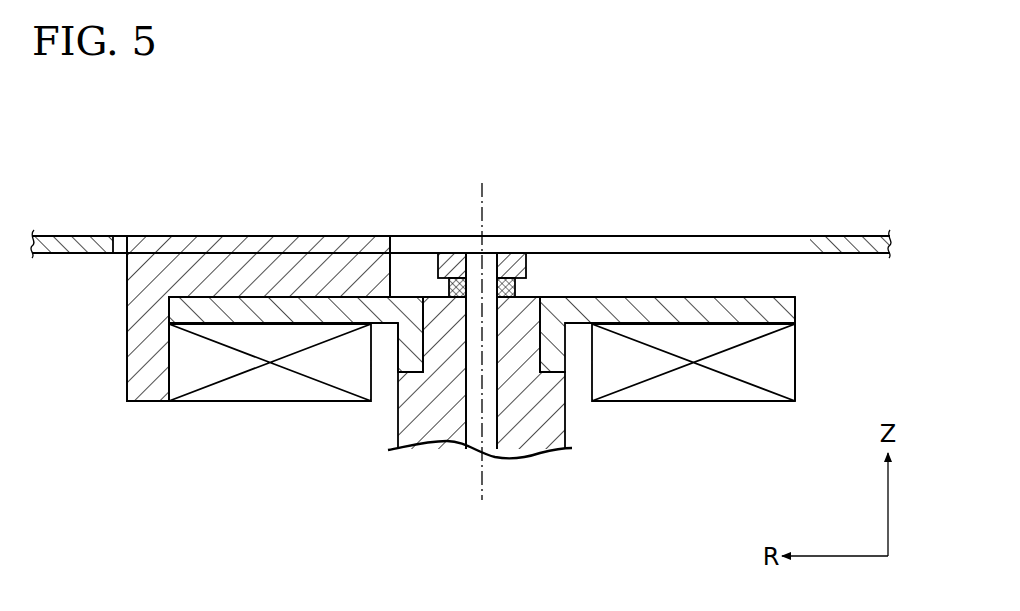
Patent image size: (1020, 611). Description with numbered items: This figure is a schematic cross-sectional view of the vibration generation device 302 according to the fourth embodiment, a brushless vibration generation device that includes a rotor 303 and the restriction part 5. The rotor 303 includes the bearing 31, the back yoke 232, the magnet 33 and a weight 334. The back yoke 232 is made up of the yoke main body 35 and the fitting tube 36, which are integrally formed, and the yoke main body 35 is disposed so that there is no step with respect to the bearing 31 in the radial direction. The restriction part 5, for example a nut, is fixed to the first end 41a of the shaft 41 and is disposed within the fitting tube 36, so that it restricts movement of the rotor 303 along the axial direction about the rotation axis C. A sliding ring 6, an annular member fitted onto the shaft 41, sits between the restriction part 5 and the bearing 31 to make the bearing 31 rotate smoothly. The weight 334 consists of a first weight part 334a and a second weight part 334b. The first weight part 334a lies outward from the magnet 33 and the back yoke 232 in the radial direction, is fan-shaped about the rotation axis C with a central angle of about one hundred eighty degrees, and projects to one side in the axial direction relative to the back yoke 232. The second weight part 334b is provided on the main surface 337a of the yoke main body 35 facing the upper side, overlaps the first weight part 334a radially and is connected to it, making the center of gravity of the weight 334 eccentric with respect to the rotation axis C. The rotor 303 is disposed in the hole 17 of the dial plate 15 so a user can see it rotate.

The restriction part 5 is at (512, 258).
The sliding ring 6 is at (507, 290).
The dial plate 15 is at (68, 243).
The hole 17 is at (600, 236).
The bearing 31 is at (532, 451).
The magnet 33 is at (269, 393).
The yoke main body 35 is at (695, 302).
The fitting tube 36 is at (402, 350).
The shaft 41 is at (470, 375).
The first end 41a is at (473, 252).
The back yoke 232 is at (768, 296).
The vibration generation device 302 is at (802, 292).
The rotor 303 is at (806, 358).
The weight 334 is at (315, 152).
The first weight part 334a is at (133, 348).
The second weight part 334b is at (279, 243).
The main surface 337a is at (341, 297).
The rotation axis C is at (479, 358).